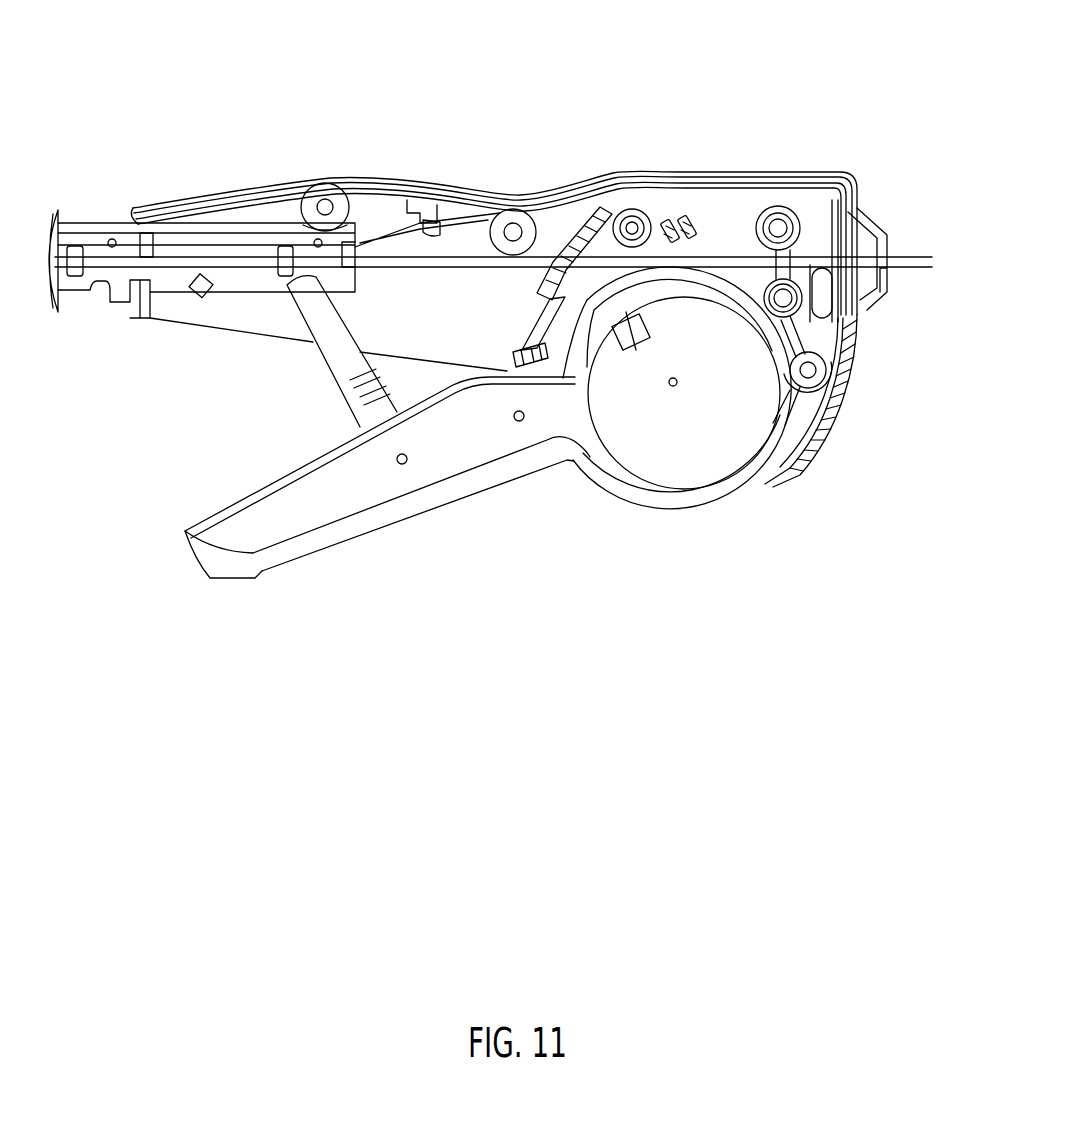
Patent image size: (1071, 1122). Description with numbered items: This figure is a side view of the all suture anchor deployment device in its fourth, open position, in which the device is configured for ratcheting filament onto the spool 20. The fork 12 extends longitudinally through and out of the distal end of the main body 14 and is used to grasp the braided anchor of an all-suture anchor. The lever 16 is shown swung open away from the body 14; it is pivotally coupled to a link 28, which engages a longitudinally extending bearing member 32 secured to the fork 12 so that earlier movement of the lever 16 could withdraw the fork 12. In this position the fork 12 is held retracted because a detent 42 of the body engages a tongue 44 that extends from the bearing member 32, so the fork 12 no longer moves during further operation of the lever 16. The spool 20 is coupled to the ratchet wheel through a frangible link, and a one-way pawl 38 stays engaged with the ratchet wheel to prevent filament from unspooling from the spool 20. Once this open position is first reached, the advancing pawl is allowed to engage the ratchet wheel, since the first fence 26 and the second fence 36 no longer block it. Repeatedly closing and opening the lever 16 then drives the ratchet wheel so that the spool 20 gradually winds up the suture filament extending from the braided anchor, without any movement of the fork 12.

The fork 12 is at (913, 257).
The main body 14 is at (772, 195).
The lever 16 is at (442, 495).
The spool 20 is at (550, 328).
The first fence 26 is at (570, 257).
The link 28 is at (307, 347).
The bearing member 32 is at (163, 272).
The second fence 36 is at (613, 205).
The one-way pawl 38 is at (663, 227).
The detent 42 is at (450, 223).
The tongue 44 is at (383, 232).